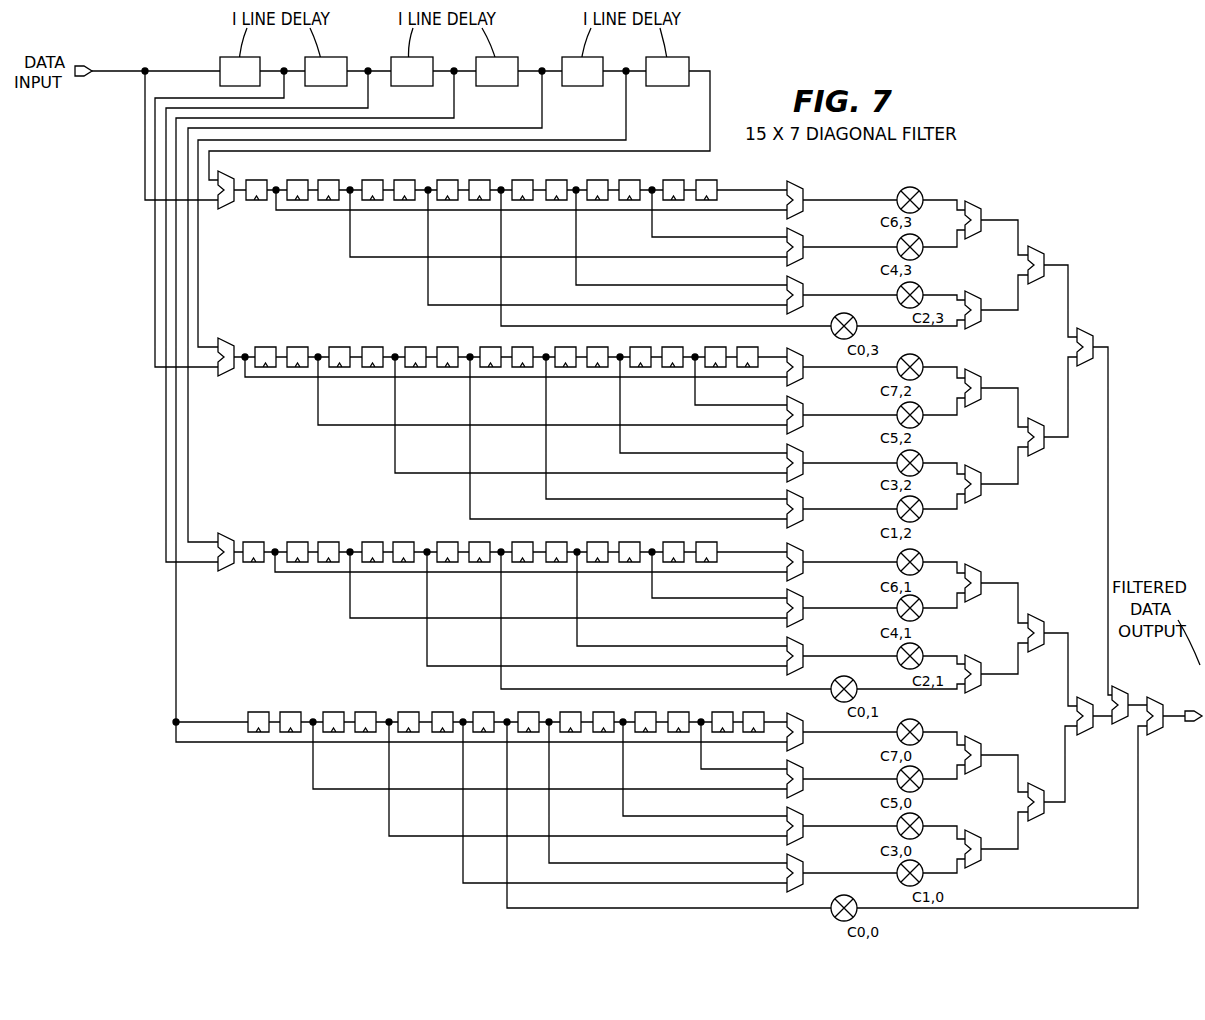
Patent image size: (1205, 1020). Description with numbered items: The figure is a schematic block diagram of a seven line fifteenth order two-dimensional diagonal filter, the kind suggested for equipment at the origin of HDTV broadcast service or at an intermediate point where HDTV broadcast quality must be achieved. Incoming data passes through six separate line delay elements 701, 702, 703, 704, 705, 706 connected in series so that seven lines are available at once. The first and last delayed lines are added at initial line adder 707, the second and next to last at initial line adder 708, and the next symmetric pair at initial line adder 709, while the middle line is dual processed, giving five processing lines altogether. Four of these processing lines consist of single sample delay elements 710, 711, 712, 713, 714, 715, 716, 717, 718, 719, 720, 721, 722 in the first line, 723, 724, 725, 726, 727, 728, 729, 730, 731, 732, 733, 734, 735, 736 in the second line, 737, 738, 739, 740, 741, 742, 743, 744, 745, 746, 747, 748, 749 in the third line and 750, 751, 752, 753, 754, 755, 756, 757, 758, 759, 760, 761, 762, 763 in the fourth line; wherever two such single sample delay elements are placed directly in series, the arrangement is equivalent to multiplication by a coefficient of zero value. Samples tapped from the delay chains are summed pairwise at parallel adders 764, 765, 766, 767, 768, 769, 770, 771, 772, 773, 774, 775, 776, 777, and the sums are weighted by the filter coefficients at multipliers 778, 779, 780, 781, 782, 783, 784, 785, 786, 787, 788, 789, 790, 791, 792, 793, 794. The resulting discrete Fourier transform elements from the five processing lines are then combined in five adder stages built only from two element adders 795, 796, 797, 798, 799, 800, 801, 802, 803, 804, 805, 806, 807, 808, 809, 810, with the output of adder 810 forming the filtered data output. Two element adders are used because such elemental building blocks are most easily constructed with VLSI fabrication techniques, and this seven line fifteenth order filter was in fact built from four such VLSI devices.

The line delay element 701 is at (257, 44).
The line delay element 702 is at (346, 44).
The line delay element 703 is at (429, 44).
The line delay element 704 is at (517, 44).
The line delay element 705 is at (601, 44).
The line delay element 706 is at (686, 44).
The initial line adder 707 is at (234, 166).
The initial line adder 708 is at (232, 334).
The initial line adder 709 is at (231, 527).
The single sample delay element 710 is at (259, 200).
The single sample delay element 711 is at (301, 166).
The single sample delay element 712 is at (331, 200).
The single sample delay element 713 is at (375, 166).
The single sample delay element 714 is at (407, 200).
The single sample delay element 715 is at (454, 166).
The single sample delay element 716 is at (482, 200).
The single sample delay element 717 is at (527, 166).
The single sample delay element 718 is at (559, 200).
The single sample delay element 719 is at (601, 166).
The single sample delay element 720 is at (632, 200).
The single sample delay element 721 is at (676, 166).
The single sample delay element 722 is at (709, 200).
The single sample delay element 723 is at (276, 334).
The single sample delay element 724 is at (299, 367).
The single sample delay element 725 is at (342, 334).
The single sample delay element 726 is at (374, 367).
The single sample delay element 727 is at (413, 334).
The single sample delay element 728 is at (449, 367).
The single sample delay element 729 is at (487, 334).
The single sample delay element 730 is at (524, 367).
The single sample delay element 731 is at (562, 334).
The single sample delay element 732 is at (599, 367).
The single sample delay element 733 is at (639, 334).
The single sample delay element 734 is at (674, 367).
The single sample delay element 735 is at (712, 334).
The single sample delay element 736 is at (749, 367).
The single sample delay element 737 is at (255, 562).
The single sample delay element 738 is at (297, 527).
The single sample delay element 739 is at (330, 562).
The single sample delay element 740 is at (371, 527).
The single sample delay element 741 is at (405, 562).
The single sample delay element 742 is at (449, 527).
The single sample delay element 743 is at (481, 562).
The single sample delay element 744 is at (522, 527).
The single sample delay element 745 is at (558, 562).
The single sample delay element 746 is at (597, 527).
The single sample delay element 747 is at (631, 562).
The single sample delay element 748 is at (671, 527).
The single sample delay element 749 is at (708, 562).
The single sample delay element 750 is at (261, 697).
The single sample delay element 751 is at (292, 732).
The single sample delay element 752 is at (336, 697).
The single sample delay element 753 is at (367, 732).
The single sample delay element 754 is at (412, 697).
The single sample delay element 755 is at (444, 732).
The single sample delay element 756 is at (489, 697).
The single sample delay element 757 is at (530, 732).
The single sample delay element 758 is at (576, 697).
The single sample delay element 759 is at (605, 732).
The single sample delay element 760 is at (649, 697).
The single sample delay element 761 is at (680, 732).
The single sample delay element 762 is at (724, 697).
The single sample delay element 763 is at (755, 732).
The parallel adder 764 is at (804, 182).
The parallel adder 765 is at (804, 229).
The parallel adder 766 is at (804, 277).
The parallel adder 767 is at (804, 349).
The parallel adder 768 is at (804, 397).
The parallel adder 769 is at (804, 445).
The parallel adder 770 is at (804, 491).
The parallel adder 771 is at (804, 544).
The parallel adder 772 is at (804, 590).
The parallel adder 773 is at (804, 638).
The parallel adder 774 is at (804, 714).
The parallel adder 775 is at (804, 761).
The parallel adder 776 is at (804, 808).
The parallel adder 777 is at (804, 855).
The multiplier 778 is at (926, 172).
The multiplier 779 is at (926, 230).
The multiplier 780 is at (926, 277).
The multiplier 781 is at (856, 305).
The multiplier 782 is at (926, 350).
The multiplier 783 is at (926, 397).
The multiplier 784 is at (926, 444).
The multiplier 785 is at (926, 490).
The multiplier 786 is at (926, 543).
The multiplier 787 is at (926, 589).
The multiplier 788 is at (926, 637).
The multiplier 789 is at (856, 668).
The multiplier 790 is at (926, 714).
The multiplier 791 is at (926, 761).
The multiplier 792 is at (926, 809).
The multiplier 793 is at (926, 856).
The multiplier 794 is at (856, 889).
The adder 795 is at (984, 190).
The adder 796 is at (984, 282).
The adder 797 is at (984, 368).
The adder 798 is at (984, 455).
The adder 799 is at (984, 555).
The adder 800 is at (977, 640).
The adder 801 is at (977, 718).
The adder 802 is at (977, 820).
The adder 803 is at (1042, 233).
The adder 804 is at (1042, 405).
The adder 805 is at (1042, 605).
The adder 806 is at (1034, 773).
The adder 807 is at (1096, 318).
The adder 808 is at (1086, 734).
The adder 809 is at (1124, 675).
The adder 810 is at (1157, 734).